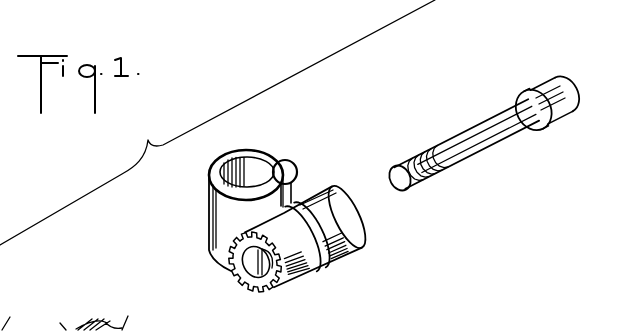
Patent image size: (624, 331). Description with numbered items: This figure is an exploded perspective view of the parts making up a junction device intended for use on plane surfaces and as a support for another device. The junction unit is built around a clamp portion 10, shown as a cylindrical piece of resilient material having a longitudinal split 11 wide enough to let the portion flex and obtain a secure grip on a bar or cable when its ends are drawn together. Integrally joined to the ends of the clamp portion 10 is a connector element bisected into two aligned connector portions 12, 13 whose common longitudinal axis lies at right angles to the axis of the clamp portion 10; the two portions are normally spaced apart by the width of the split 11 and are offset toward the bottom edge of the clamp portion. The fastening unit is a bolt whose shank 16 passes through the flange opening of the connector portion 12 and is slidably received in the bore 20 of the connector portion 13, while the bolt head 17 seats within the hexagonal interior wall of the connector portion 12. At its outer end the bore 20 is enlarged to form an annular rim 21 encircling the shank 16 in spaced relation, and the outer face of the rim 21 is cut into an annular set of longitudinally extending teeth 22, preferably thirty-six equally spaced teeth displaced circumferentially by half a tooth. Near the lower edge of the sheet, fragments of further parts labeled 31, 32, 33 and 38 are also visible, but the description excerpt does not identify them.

The clamp portion 10 is at (252, 146).
The longitudinal split 11 is at (278, 163).
The connector portion 12 is at (309, 249).
The connector portion 13 is at (300, 279).
The bolt shank 16 is at (458, 136).
The bolt head 17 is at (556, 77).
The bore 20 is at (234, 281).
The rim 21 is at (246, 286).
The teeth 22 is at (264, 290).
The serrated member 31 is at (76, 330).
The member 32 is at (133, 314).
The member 33 is at (52, 323).
The member 38 is at (16, 323).